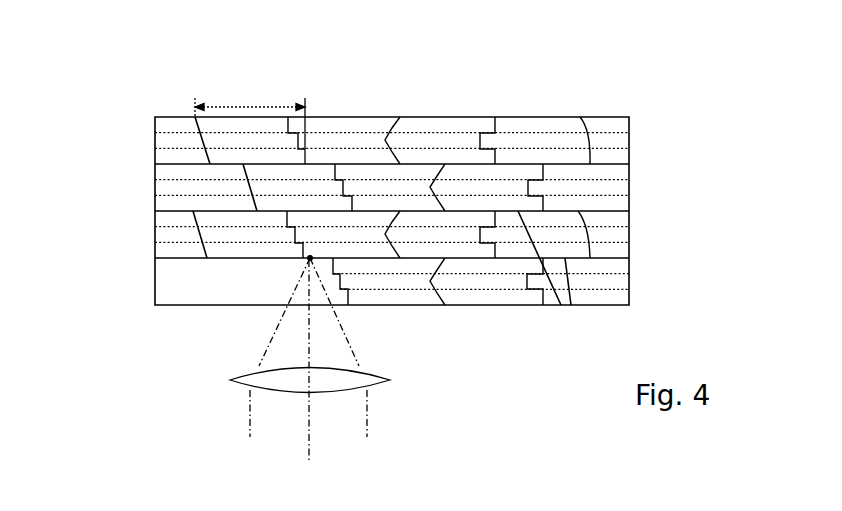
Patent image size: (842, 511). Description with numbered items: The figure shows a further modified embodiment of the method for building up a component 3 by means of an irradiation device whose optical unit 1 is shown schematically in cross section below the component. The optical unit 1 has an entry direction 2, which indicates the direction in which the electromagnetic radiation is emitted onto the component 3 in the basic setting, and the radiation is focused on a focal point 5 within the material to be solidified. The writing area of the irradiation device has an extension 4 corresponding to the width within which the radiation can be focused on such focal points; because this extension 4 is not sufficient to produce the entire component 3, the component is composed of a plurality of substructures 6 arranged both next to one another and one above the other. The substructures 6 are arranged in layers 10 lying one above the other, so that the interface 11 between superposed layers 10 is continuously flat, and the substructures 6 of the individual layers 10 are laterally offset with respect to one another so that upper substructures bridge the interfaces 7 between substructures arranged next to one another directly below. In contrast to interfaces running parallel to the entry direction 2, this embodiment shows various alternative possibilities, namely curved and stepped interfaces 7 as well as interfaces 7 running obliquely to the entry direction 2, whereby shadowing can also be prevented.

The optical unit 1 is at (397, 378).
The entry direction 2 is at (305, 455).
The component 3 is at (101, 101).
The extension 4 is at (250, 122).
The focal point 5 is at (304, 263).
The substructure 6 is at (420, 172).
The interface 7 is at (300, 243).
The layer 10 is at (688, 282).
The interface 11 is at (571, 305).